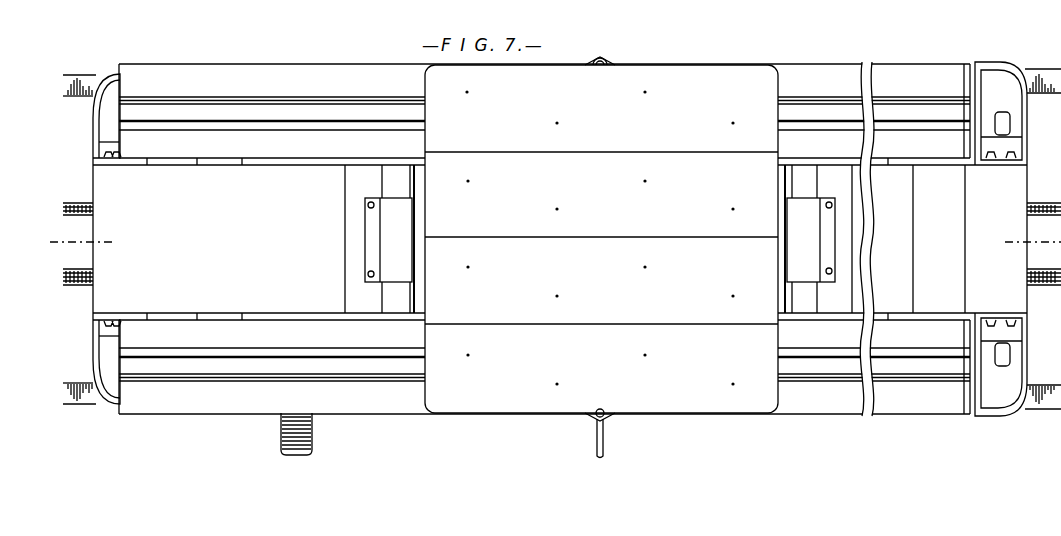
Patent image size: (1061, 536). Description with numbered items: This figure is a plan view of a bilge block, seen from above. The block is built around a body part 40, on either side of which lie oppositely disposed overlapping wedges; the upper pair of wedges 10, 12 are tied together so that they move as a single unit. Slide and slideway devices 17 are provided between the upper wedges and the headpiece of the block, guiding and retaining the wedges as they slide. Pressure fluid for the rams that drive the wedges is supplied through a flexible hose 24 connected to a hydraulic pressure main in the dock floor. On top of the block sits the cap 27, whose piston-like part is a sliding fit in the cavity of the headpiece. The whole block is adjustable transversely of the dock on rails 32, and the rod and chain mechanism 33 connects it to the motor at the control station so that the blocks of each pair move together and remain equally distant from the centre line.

The upper wedge 10 is at (253, 338).
The upper wedge 12 is at (317, 140).
The slide and slideway devices 17 is at (260, 120).
The flexible hose 24 is at (305, 437).
The cap 27 is at (618, 221).
The rails 32 is at (86, 98).
The rod and chain mechanism 33 is at (82, 247).
The body part 40 is at (991, 67).